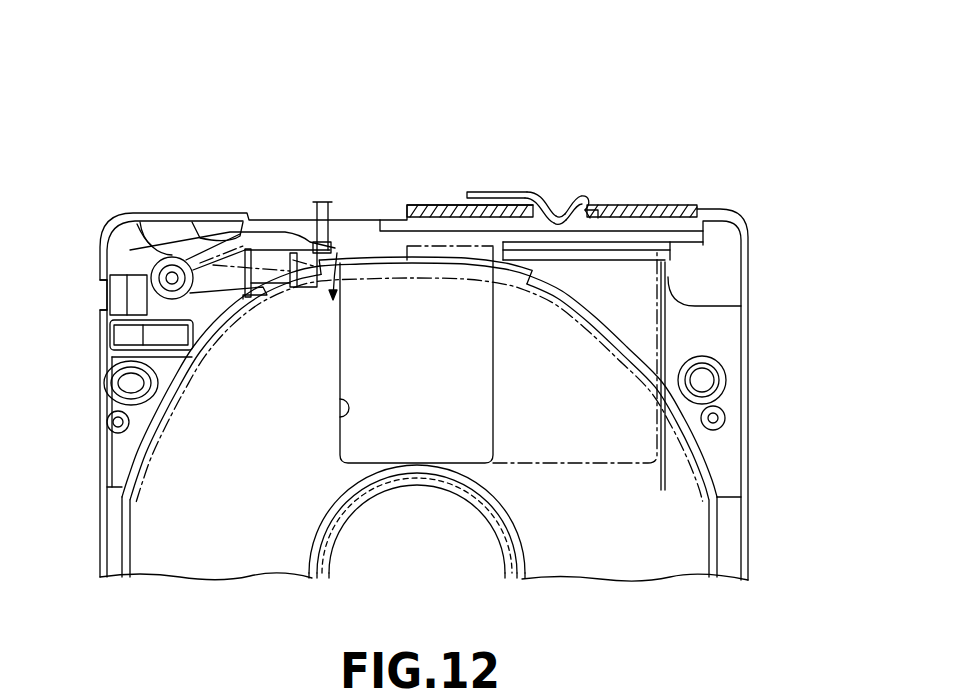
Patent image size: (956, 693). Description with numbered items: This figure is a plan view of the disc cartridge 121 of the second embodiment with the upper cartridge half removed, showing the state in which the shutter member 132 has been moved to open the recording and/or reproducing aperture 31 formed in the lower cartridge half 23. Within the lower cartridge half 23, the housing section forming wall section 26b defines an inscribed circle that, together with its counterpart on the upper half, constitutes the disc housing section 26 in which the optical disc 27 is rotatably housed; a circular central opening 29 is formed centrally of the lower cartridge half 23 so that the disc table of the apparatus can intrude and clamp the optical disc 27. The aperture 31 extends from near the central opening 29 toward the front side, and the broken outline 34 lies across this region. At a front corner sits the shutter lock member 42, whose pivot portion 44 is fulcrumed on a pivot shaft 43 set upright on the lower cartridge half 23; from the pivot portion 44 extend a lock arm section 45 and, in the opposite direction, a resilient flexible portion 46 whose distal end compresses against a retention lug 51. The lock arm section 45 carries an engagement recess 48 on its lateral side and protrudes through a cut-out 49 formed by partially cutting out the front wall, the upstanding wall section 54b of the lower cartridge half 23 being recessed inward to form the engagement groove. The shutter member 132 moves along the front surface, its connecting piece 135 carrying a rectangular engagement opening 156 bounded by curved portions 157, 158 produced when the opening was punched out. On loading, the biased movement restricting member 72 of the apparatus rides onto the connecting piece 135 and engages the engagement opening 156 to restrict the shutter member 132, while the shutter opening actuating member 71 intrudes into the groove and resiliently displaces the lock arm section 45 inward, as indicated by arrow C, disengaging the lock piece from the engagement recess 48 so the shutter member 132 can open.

The disc cartridge 121 is at (688, 91).
The lower cartridge half 23 is at (746, 567).
The disc housing section 26 is at (120, 500).
The housing section forming wall section 26b is at (150, 420).
The optical disc 27 is at (247, 556).
The central opening 29 is at (334, 553).
The recording and/or reproducing aperture 31 is at (336, 412).
The shutter outline 34 is at (583, 462).
The shutter lock member 42 is at (147, 215).
The pivot shaft 43 is at (152, 272).
The pivot portion 44 is at (187, 292).
The lock arm section 45 is at (232, 230).
The resilient flexible portion 46 is at (248, 296).
The engagement recess 48 is at (285, 262).
The cut-out 49 is at (215, 232).
The retention lug 51 is at (255, 305).
The upstanding wall section 54b is at (583, 262).
The shutter opening actuating member 71 is at (337, 208).
The movement restricting member 72 is at (558, 213).
The shutter member 132 is at (683, 207).
The connecting piece 135 is at (496, 198).
The engagement opening 156 is at (577, 206).
The curved portion 157 is at (540, 211).
The curved portion 158 is at (590, 208).